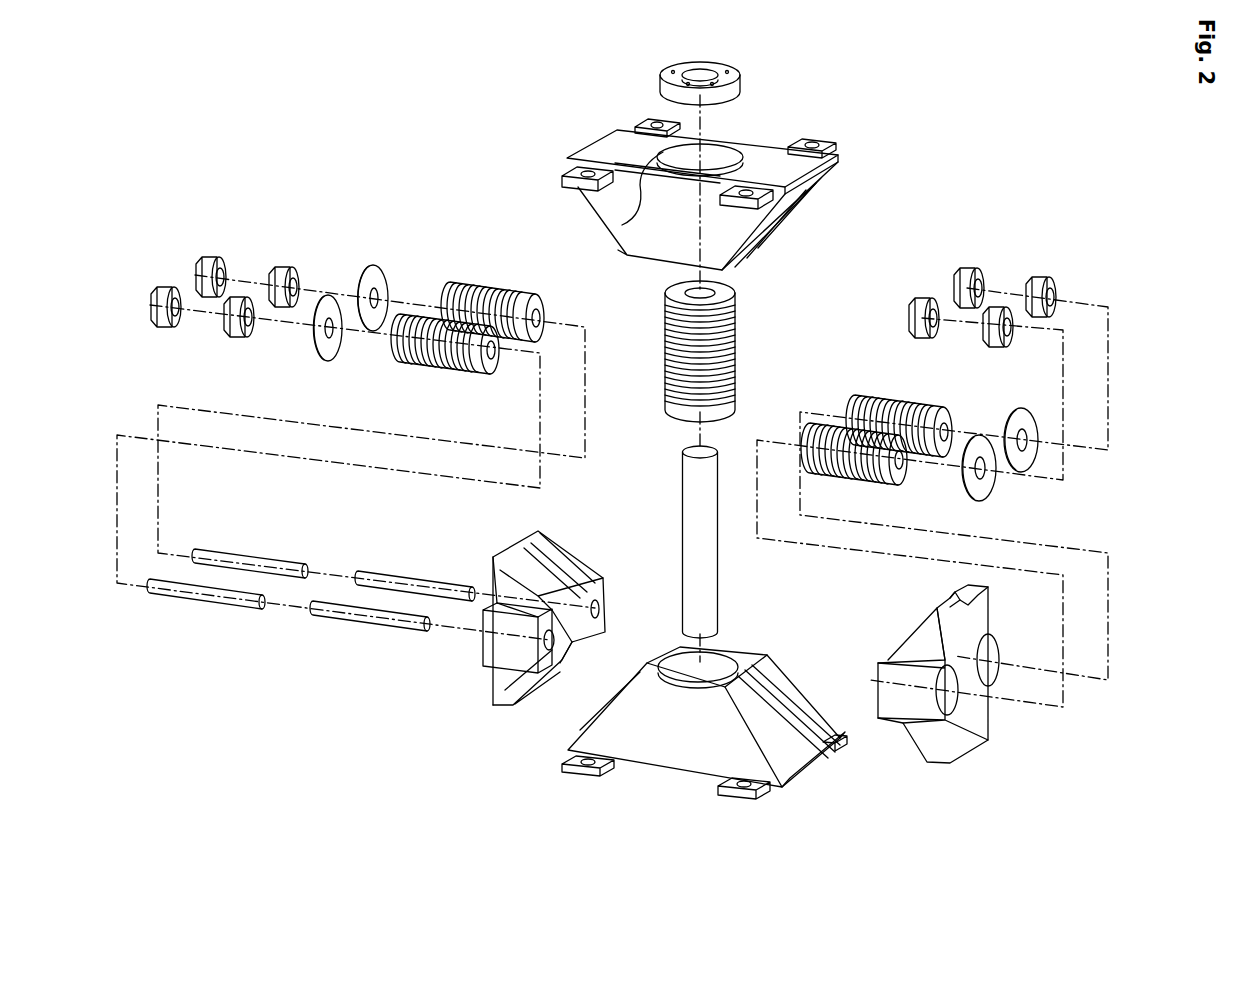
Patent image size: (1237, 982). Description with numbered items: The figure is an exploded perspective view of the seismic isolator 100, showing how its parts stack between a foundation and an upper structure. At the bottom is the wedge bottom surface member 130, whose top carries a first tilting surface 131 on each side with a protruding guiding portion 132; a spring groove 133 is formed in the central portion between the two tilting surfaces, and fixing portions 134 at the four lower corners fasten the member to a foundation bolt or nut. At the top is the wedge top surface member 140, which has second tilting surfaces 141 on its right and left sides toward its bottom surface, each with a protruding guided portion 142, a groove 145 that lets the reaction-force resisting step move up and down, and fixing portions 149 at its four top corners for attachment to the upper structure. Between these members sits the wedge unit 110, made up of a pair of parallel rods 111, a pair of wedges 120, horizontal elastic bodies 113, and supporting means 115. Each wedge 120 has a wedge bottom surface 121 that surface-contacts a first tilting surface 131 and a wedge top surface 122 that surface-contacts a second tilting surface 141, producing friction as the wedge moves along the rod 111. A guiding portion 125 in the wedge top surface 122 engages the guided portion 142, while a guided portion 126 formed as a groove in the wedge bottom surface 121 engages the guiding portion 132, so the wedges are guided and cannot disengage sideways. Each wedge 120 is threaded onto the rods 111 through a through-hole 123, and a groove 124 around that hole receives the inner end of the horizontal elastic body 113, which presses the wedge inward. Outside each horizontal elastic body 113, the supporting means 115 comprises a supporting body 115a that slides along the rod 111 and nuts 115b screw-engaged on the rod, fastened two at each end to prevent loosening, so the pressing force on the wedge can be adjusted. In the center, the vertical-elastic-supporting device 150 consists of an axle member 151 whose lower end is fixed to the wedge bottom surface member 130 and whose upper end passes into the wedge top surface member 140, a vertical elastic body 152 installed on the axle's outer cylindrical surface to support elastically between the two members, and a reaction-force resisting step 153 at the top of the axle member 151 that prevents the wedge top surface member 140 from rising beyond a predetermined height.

The seismic isolator 100 is at (190, 176).
The wedge unit 110 is at (424, 552).
The rods 111 is at (220, 604).
The horizontal elastic body 113 is at (430, 366).
The supporting means 115 is at (267, 192).
The supporting body 115a is at (358, 278).
The nut 115b is at (283, 267).
The wedges 120 is at (482, 656).
The wedge bottom surface 121 is at (568, 662).
The wedge top surface 122 is at (528, 548).
The through-hole 123 is at (598, 608).
The groove 124 is at (950, 700).
The guiding portion 125 is at (557, 546).
The guided portion 126 is at (560, 640).
The wedge bottom surface member 130 is at (675, 745).
The first tilting surface 131 is at (580, 728).
The guiding portion 132 is at (798, 740).
The spring groove 133 is at (720, 658).
The fixing portions 134 is at (568, 770).
The wedge top surface member 140 is at (598, 135).
The second tilting surfaces 141 is at (781, 228).
The guided portion 142 is at (800, 207).
The groove 145 is at (622, 225).
The fixing portions 149 is at (836, 150).
The vertical-elastic-supporting device 150 is at (655, 350).
The axle member 151 is at (686, 470).
The vertical elastic body 152 is at (740, 325).
The reaction-force resisting step 153 is at (727, 72).